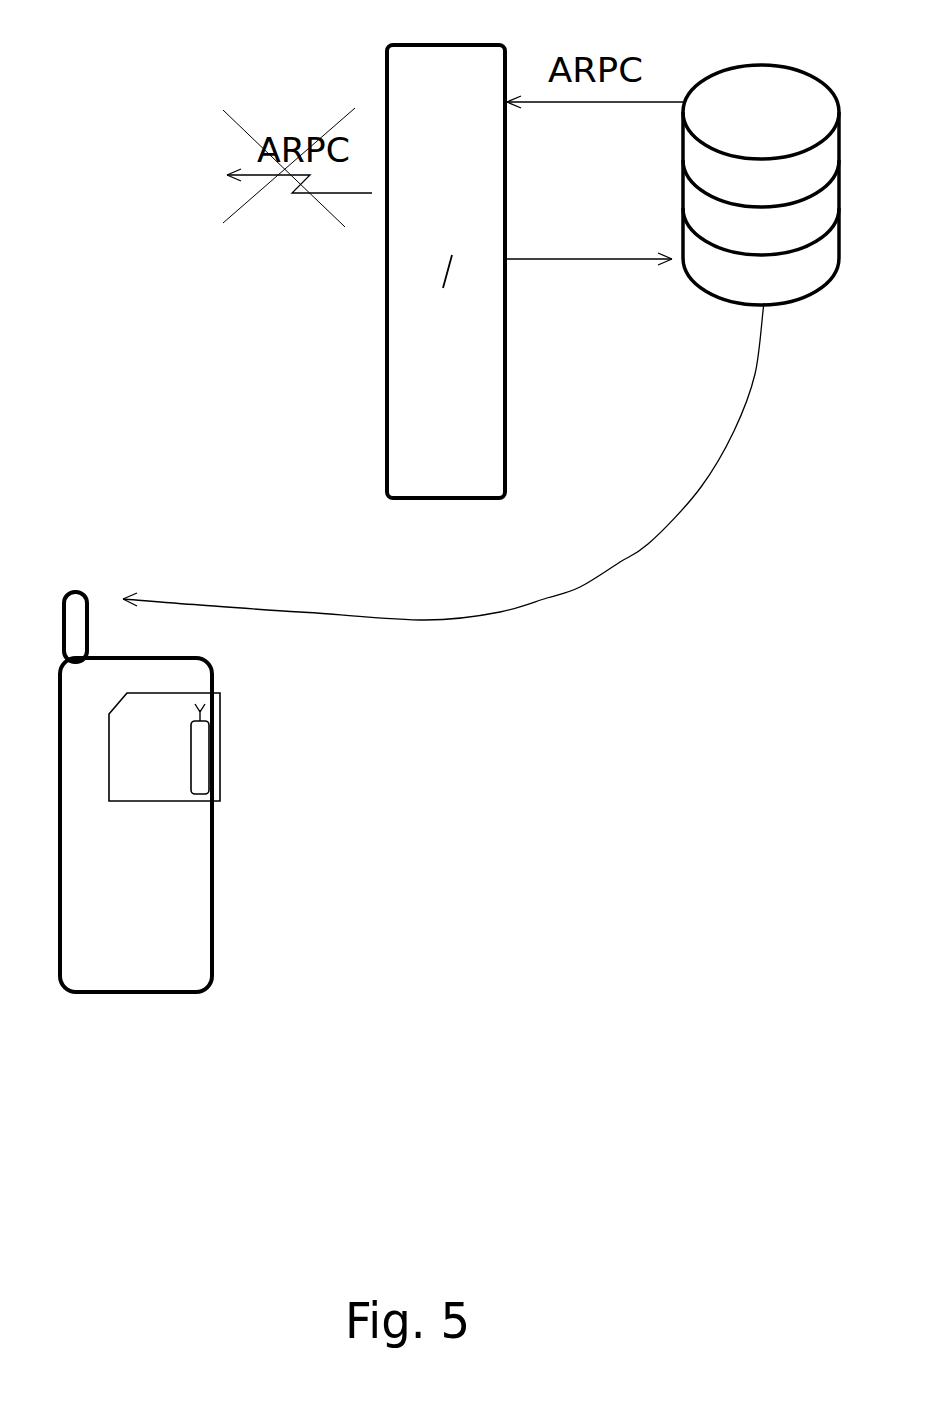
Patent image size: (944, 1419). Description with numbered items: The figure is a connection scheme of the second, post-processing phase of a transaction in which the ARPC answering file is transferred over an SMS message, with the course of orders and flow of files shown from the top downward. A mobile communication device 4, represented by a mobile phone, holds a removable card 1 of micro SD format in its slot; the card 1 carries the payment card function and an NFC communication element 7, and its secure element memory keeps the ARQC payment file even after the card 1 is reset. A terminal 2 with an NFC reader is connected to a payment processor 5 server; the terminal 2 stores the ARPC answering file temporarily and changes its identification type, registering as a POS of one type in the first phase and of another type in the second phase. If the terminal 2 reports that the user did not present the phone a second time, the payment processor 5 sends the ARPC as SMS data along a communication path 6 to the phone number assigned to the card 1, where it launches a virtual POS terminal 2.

The card 1 is at (136, 783).
The payment terminal 2 is at (477, 452).
The mobile communication device 4 is at (136, 912).
The payment processor 5 is at (803, 270).
The communication path 6 is at (425, 620).
The communication element 7 is at (200, 749).